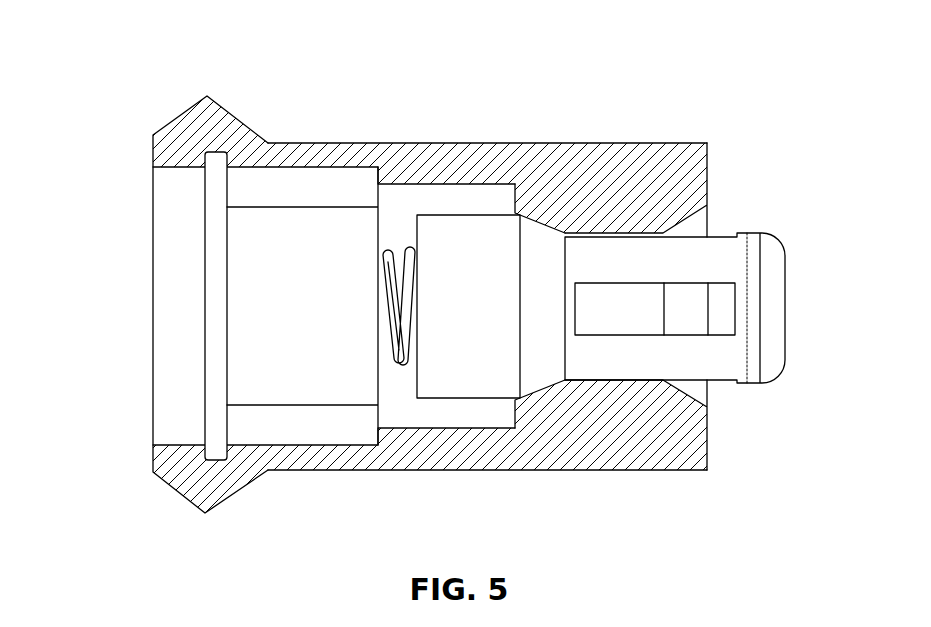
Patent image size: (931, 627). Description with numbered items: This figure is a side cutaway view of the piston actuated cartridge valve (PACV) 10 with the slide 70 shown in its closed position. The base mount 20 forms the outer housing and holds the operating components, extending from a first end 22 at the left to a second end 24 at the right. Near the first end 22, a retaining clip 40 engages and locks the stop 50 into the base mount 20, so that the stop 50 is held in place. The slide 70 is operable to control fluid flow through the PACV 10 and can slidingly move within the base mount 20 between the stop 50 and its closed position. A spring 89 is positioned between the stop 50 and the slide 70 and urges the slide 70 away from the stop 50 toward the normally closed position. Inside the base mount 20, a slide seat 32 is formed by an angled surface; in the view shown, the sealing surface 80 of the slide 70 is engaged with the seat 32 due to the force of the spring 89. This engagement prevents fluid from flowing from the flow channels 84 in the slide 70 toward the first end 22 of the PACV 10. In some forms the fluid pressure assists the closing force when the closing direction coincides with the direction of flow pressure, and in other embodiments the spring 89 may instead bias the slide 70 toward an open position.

The piston actuated cartridge valve (PACV) 10 is at (261, 69).
The base mount 20 is at (422, 142).
The first end 22 is at (150, 462).
The second end 24 is at (708, 160).
The slide seat 32 is at (528, 228).
The retaining clip 40 is at (217, 198).
The stop 50 is at (340, 382).
The slide 70 is at (713, 352).
The sealing surface 80 is at (557, 232).
The flow channels 84 is at (723, 307).
The spring 89 is at (393, 362).